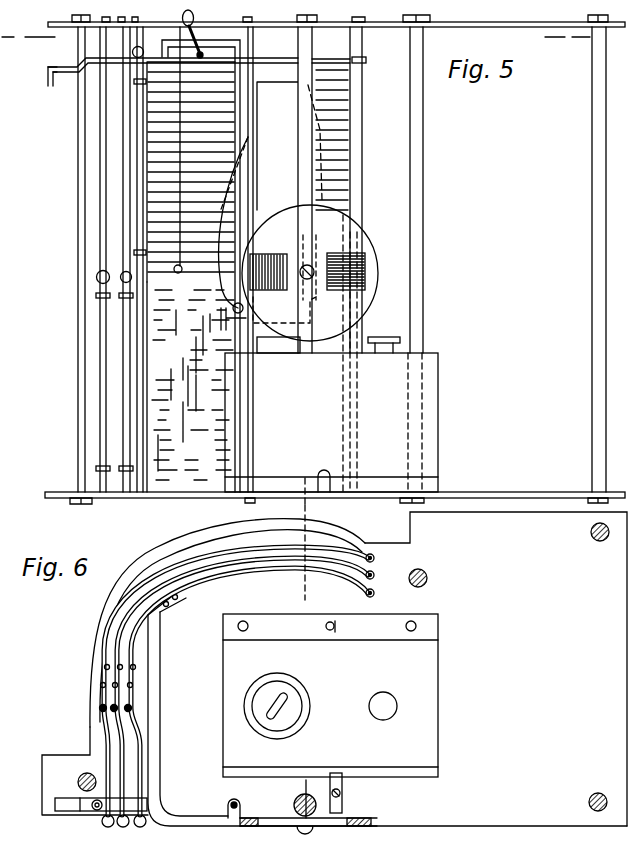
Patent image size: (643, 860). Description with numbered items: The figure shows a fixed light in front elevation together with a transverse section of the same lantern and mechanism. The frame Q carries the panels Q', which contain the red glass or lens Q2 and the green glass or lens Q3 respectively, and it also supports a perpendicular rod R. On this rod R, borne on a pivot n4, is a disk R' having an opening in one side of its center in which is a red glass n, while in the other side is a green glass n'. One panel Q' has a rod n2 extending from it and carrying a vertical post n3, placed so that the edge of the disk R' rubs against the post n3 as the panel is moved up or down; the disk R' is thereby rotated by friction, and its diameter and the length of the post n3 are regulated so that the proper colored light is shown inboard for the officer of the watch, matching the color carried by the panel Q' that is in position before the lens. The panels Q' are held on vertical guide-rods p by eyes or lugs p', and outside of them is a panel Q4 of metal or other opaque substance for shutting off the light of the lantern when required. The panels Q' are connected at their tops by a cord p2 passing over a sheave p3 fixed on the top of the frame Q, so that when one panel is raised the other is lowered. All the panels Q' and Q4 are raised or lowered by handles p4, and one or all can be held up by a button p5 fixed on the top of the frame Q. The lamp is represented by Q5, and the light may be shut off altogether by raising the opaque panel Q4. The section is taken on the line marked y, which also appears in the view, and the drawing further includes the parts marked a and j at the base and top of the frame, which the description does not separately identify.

In FIG. 5, the vertical guide-rod p is at (199, 272).
In FIG. 6, the vertical guide-rod p is at (244, 687).
In FIG. 5, the eye or lug p' is at (235, 259).
In FIG. 6, the eye or lug p' is at (254, 687).
In FIG. 5, the cord p2 is at (181, 111).
In FIG. 5, the sheave p3 is at (193, 31).
In FIG. 5, the handle p4 is at (141, 50).
In FIG. 6, the handle p4 is at (112, 776).
In FIG. 5, the button p5 is at (40, 90).
In FIG. 6, the button p5 is at (90, 808).
In FIG. 5, the red glass n is at (268, 264).
In FIG. 5, the green glass n' is at (361, 264).
In FIG. 5, the rod n2 is at (198, 33).
In FIG. 6, the rod n2 is at (158, 804).
In FIG. 5, the vertical post n3 is at (240, 195).
In FIG. 6, the vertical post n3 is at (245, 805).
In FIG. 5, the pivot n4 is at (311, 262).
In FIG. 6, the pivot n4 is at (292, 808).
In FIG. 6, the frame Q is at (334, 669).
In FIG. 5, the panel Q' is at (369, 259).
In FIG. 6, the panel Q' is at (213, 590).
In FIG. 5, the red glass or lens Q2 is at (191, 172).
In FIG. 5, the green glass or lens Q3 is at (190, 387).
In FIG. 5, the opaque panel Q4 is at (100, 287).
In FIG. 6, the opaque panel Q4 is at (160, 582).
In FIG. 5, the lamp Q5 is at (331, 414).
In FIG. 6, the lamp Q5 is at (330, 695).
In FIG. 5, the perpendicular rod R is at (285, 259).
In FIG. 6, the perpendicular rod R is at (300, 797).
In FIG. 5, the disk R' is at (310, 273).
In FIG. 6, the disk R' is at (359, 807).
In FIG. 5, the base plate a is at (455, 496).
In FIG. 5, the top plate j is at (313, 253).
In FIG. 5, the section line y y is at (297, 496).
In FIG. 6, the section line y y is at (315, 659).